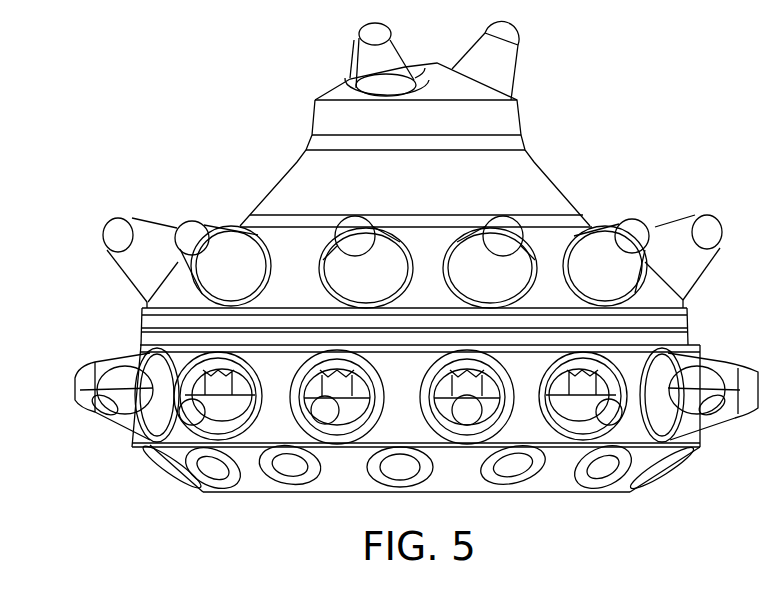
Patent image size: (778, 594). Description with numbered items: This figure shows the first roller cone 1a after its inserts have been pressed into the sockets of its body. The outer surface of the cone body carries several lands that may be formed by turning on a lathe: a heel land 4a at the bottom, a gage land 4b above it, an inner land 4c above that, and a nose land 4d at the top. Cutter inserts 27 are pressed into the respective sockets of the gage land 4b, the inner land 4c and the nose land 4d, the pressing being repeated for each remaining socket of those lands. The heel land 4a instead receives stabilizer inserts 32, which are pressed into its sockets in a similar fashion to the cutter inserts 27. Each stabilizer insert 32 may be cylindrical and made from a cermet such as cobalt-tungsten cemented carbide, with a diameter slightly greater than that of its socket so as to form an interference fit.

The first roller cone 1a is at (165, 107).
The heel land 4a is at (560, 476).
The gage land 4b is at (267, 428).
The inner land 4c is at (545, 232).
The nose land 4d is at (476, 87).
The cutter insert 27 is at (123, 258).
The stabilizer insert 32 is at (603, 470).